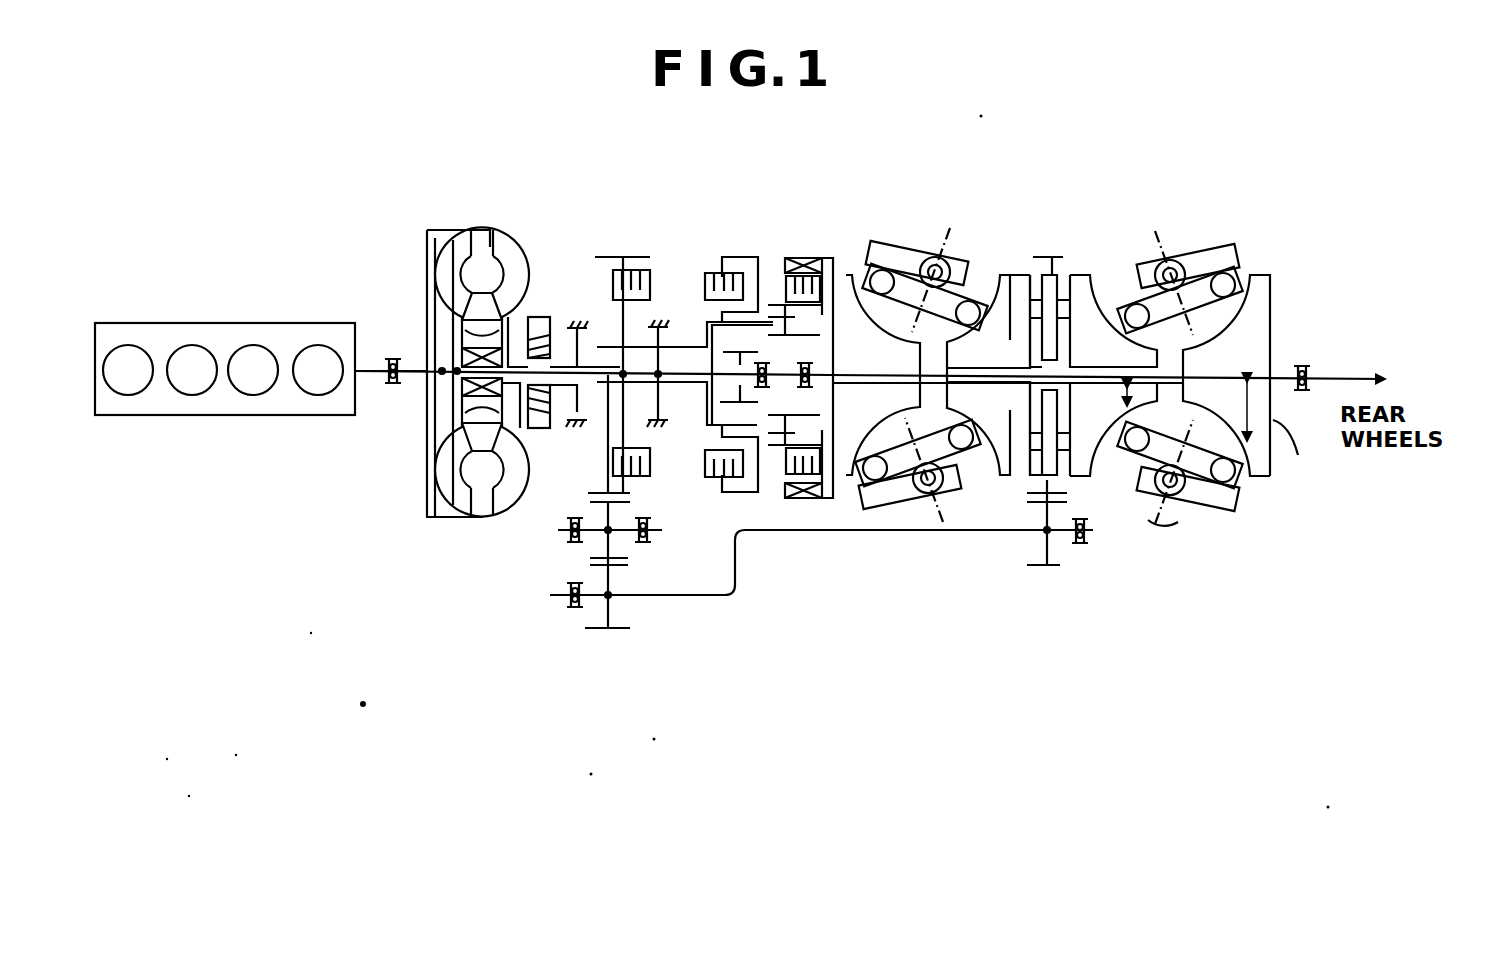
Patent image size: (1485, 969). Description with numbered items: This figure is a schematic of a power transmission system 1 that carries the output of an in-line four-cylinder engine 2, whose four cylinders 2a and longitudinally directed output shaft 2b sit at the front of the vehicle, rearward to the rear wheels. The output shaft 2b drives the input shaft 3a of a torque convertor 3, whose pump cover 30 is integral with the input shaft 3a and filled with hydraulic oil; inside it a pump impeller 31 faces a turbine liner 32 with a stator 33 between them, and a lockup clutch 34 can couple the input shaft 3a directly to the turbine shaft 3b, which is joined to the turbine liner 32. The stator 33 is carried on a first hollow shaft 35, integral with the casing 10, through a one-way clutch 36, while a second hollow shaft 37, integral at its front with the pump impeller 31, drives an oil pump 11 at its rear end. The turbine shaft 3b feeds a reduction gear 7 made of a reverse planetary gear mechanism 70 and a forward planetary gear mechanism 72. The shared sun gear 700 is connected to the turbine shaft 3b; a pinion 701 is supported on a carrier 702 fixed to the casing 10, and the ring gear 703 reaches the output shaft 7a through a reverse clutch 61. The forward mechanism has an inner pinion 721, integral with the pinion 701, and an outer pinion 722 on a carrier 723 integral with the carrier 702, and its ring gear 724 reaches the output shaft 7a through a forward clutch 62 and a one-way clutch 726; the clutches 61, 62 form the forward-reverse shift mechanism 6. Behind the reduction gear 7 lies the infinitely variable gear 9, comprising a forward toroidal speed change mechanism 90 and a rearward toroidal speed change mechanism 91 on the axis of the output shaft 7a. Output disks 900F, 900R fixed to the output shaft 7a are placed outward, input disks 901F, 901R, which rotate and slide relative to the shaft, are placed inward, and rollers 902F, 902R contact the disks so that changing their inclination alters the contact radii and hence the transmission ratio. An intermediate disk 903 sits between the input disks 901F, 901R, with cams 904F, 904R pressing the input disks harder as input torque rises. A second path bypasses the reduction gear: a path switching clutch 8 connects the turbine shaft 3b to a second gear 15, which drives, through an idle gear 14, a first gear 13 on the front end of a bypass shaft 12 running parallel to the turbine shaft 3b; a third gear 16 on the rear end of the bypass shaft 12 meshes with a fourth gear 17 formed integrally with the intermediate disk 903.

The power transmission system 1 is at (800, 190).
The in-line four-cylinder engine 2 is at (257, 318).
The cylinders 2a is at (313, 390).
The output shaft 2b is at (372, 380).
The torque convertor 3 is at (478, 335).
The input shaft 3a is at (403, 388).
The turbine shaft 3b is at (598, 392).
The forward-reverse shift mechanism 6 is at (793, 200).
The reduction gear 7 is at (762, 371).
The output shaft 7a is at (1330, 375).
The path switching clutch 8 is at (623, 255).
The infinitely variable gear 9 is at (1087, 352).
The casing 10 is at (612, 282).
The oil pump 11 is at (540, 432).
The bypass shaft 12 is at (805, 532).
The first gear 13 is at (596, 630).
The transfer gear 14 is at (590, 560).
The second gear 15 is at (603, 490).
The third gear 16 is at (1040, 568).
The fourth gear 17 is at (1070, 500).
The pump cover 30 is at (427, 264).
The pump impeller 31 is at (500, 240).
The turbine liner 32 is at (471, 230).
The stator 33 is at (506, 300).
The lockup clutch 34 is at (455, 228).
The first hollow shaft 35 is at (540, 315).
The one-way clutch 36 is at (462, 327).
The second hollow shaft 37 is at (503, 490).
The reverse clutch 61 is at (703, 298).
The forward clutch 62 is at (758, 275).
The reverse planetary gear mechanism 70 is at (708, 274).
The forward planetary gear mechanism 72 is at (834, 270).
The forward toroidal speed change mechanism 90 is at (929, 228).
The rearward toroidal speed change mechanism 91 is at (1218, 244).
The sun gear 700 is at (770, 440).
The pinion 701 is at (700, 485).
The carrier 702 is at (597, 262).
The ring gear 703 is at (739, 350).
The inner pinion 721 is at (826, 388).
The outer pinion 722 is at (833, 326).
The carrier 723 is at (878, 520).
The ring gear 724 is at (816, 486).
The one-way clutch 726 is at (822, 268).
The output disk 900F is at (851, 520).
The output disk 900R is at (1266, 277).
The input disk 901F is at (948, 490).
The input disk 901R is at (1130, 304).
The rollers 902F is at (977, 294).
The rollers 902R is at (1190, 258).
The intermediate disk 903 is at (1063, 255).
The cam 904F is at (1040, 265).
The cam 904R is at (1082, 300).